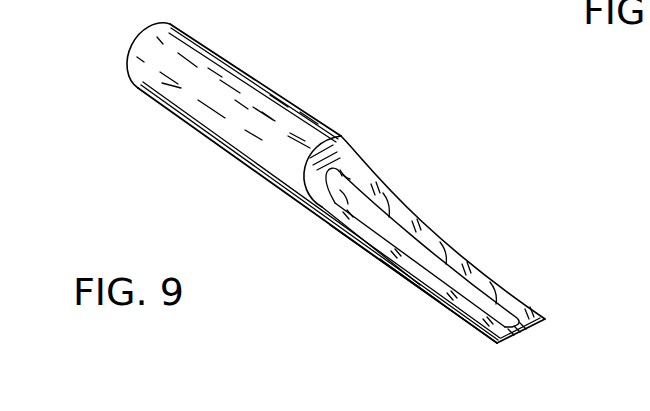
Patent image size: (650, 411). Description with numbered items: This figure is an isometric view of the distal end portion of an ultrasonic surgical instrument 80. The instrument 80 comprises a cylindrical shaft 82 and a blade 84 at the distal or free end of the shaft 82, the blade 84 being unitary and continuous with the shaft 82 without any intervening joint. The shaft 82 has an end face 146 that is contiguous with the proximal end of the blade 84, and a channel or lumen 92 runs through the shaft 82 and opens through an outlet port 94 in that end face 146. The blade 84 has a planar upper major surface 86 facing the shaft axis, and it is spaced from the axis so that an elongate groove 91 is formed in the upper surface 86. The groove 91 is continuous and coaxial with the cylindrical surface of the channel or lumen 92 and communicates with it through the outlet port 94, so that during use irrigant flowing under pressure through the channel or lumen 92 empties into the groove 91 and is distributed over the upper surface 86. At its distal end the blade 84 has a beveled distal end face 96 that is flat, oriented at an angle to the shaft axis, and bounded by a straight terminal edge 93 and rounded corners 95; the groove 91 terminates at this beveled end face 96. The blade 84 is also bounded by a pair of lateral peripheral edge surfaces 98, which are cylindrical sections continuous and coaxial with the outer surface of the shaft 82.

The surgical instrument 80 is at (338, 66).
The cylindrical shaft 82 is at (186, 33).
The blade 84 is at (331, 296).
The planar upper major surface 86 is at (410, 224).
The elongate groove 91 is at (450, 270).
The channel or lumen 92 is at (129, 92).
The straight terminal edge 93 is at (522, 337).
The outlet port 94 is at (345, 176).
The rounded corners 95 is at (550, 323).
The beveled distal end face 96 is at (487, 330).
The lateral peripheral edge surfaces 98 is at (430, 298).
The end face 146 is at (343, 138).